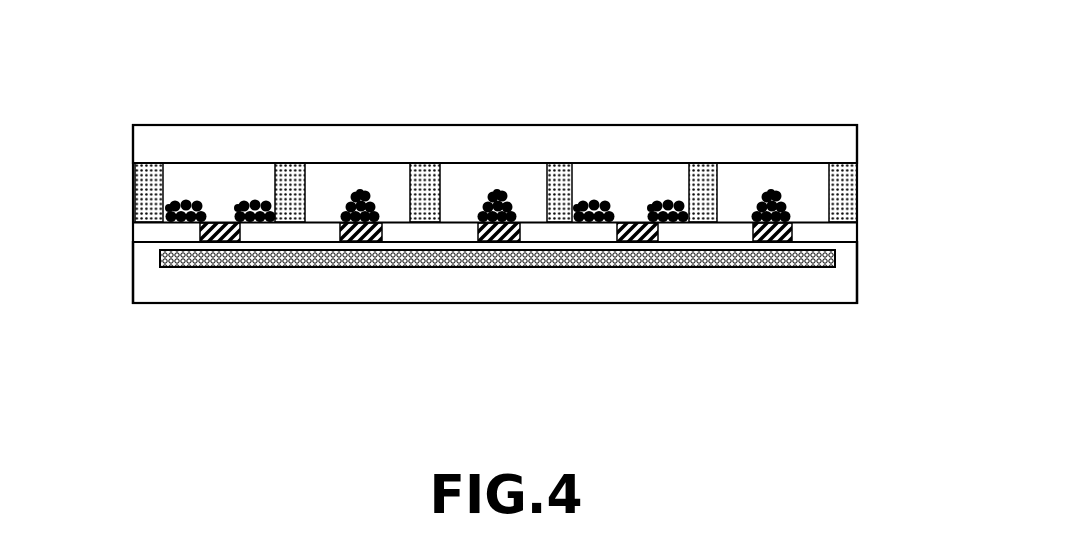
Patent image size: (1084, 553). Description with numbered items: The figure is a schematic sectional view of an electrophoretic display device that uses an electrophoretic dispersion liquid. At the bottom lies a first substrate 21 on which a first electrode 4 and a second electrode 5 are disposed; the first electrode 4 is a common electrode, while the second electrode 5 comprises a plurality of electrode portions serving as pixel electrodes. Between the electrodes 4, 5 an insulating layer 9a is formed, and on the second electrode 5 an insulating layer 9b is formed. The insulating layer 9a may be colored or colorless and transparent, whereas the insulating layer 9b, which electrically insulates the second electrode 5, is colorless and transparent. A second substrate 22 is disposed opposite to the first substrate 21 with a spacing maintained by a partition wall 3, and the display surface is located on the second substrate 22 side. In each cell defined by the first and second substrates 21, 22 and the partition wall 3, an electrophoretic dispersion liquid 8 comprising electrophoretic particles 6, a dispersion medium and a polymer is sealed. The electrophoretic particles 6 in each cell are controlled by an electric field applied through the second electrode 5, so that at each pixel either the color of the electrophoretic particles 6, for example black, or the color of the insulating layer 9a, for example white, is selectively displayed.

The partition wall 3 is at (132, 187).
The first electrode 4 is at (727, 267).
The second electrode 5 is at (353, 243).
The electrophoretic particles 6 is at (187, 207).
The electrophoretic dispersion liquid 8 is at (388, 172).
The insulating layer 9a is at (853, 253).
The insulating layer 9b is at (857, 217).
The first substrate 21 is at (505, 305).
The second substrate 22 is at (662, 121).